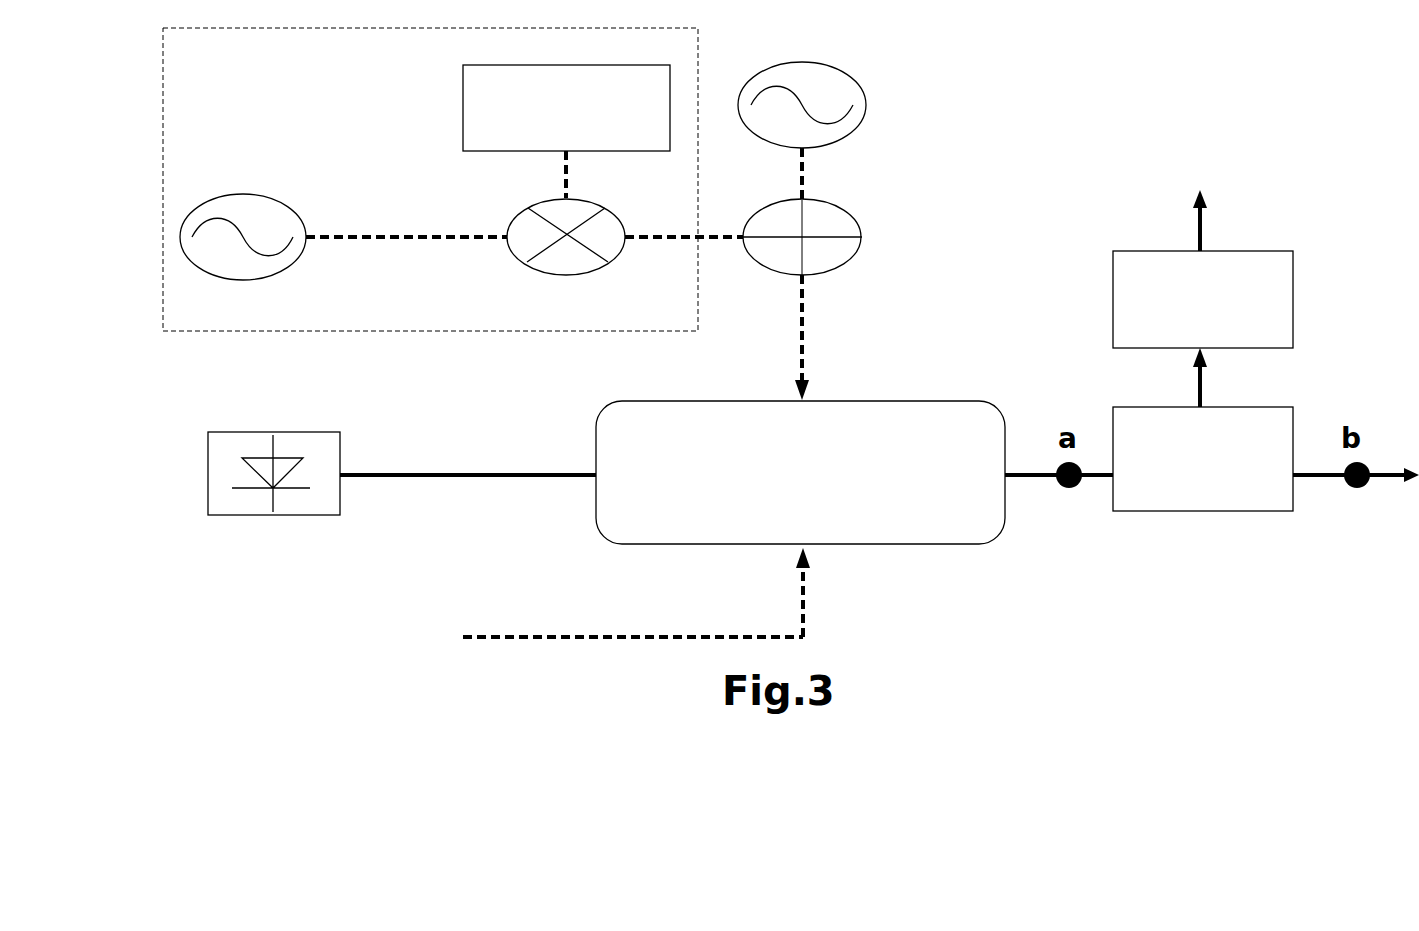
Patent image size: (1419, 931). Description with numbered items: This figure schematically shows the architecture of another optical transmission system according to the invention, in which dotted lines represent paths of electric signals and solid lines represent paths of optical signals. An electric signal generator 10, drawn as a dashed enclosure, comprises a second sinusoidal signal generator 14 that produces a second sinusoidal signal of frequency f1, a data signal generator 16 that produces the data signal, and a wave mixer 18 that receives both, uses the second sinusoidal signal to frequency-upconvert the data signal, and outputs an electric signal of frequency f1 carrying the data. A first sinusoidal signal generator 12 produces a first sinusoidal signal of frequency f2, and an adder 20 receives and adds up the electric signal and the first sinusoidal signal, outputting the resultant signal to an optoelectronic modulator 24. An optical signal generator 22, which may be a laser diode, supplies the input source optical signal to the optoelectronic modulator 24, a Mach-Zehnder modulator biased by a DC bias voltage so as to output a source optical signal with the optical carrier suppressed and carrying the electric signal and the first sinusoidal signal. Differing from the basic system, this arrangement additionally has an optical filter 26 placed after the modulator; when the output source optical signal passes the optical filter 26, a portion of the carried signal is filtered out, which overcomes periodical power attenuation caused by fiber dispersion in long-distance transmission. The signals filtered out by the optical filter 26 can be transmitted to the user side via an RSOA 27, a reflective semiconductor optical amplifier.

The electric signal generator 10 is at (502, 331).
The first sinusoidal signal generator 12 is at (770, 145).
The second sinusoidal signal generator 14 is at (241, 195).
The data signal generator 16 is at (480, 153).
The wave mixer 18 is at (560, 262).
The adder 20 is at (783, 262).
The optical signal generator 22 is at (303, 516).
The optoelectronic modulator 24 is at (922, 543).
The optical filter 26 is at (1207, 508).
The RSOA 27 is at (1127, 250).